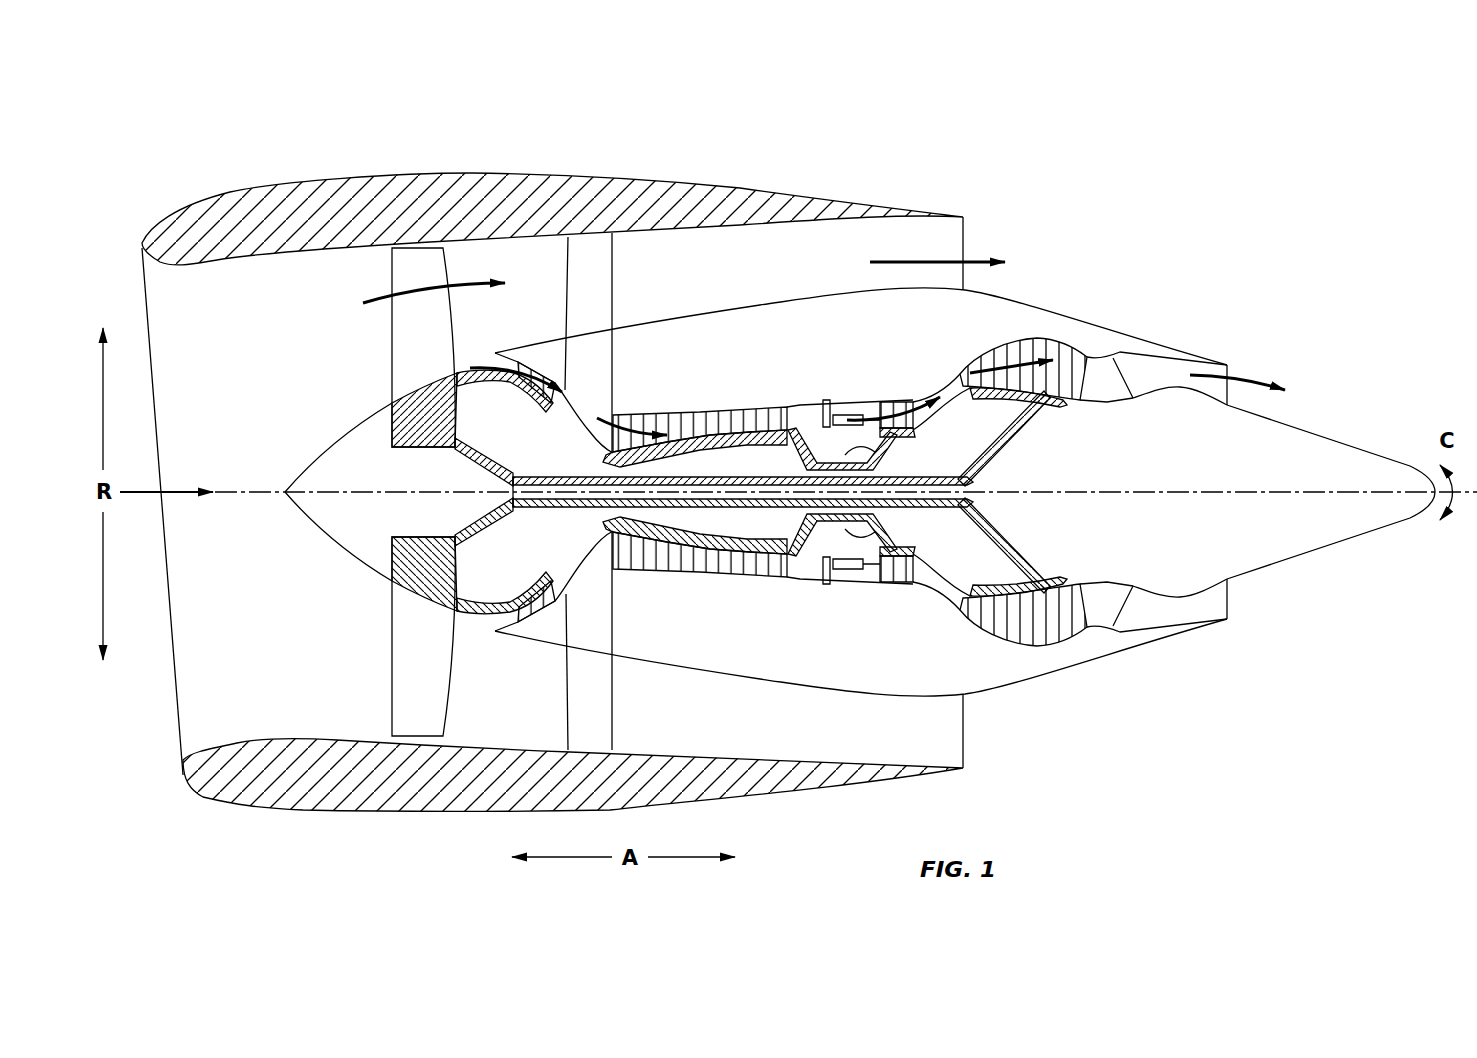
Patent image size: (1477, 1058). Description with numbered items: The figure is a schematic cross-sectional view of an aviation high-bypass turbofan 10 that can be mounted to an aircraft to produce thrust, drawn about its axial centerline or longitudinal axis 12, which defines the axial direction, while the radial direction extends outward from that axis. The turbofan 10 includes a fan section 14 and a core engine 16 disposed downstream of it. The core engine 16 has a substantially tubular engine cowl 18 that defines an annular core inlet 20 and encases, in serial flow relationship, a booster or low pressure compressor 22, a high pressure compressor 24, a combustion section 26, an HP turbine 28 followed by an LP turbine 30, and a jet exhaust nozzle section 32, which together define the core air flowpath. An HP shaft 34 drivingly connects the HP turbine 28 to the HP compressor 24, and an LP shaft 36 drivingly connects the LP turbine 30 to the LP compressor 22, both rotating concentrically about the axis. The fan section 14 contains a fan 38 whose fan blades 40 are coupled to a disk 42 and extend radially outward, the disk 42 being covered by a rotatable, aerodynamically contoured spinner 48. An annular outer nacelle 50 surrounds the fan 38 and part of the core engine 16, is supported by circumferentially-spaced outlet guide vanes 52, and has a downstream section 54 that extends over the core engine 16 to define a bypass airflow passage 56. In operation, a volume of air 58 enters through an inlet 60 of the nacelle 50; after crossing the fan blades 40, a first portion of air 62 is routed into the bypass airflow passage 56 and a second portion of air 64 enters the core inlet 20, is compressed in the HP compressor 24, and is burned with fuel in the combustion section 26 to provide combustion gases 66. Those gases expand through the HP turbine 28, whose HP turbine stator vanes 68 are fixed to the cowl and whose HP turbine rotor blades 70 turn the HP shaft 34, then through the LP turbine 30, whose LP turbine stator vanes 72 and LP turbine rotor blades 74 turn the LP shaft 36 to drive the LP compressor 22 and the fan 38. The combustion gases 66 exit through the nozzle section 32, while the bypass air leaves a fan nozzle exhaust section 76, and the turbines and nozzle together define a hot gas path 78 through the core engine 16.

The turbofan 10 is at (1140, 190).
The longitudinal axis 12 is at (1160, 492).
The fan section 14 is at (343, 280).
The core engine 16 is at (752, 365).
The engine cowl 18 is at (797, 685).
The annular core inlet 20 is at (513, 617).
The low pressure compressor 22 is at (563, 590).
The high pressure compressor 24 is at (660, 560).
The combustion section 26 is at (850, 567).
The HP turbine 28 is at (918, 578).
The LP turbine 30 is at (1065, 640).
The jet exhaust nozzle section 32 is at (1232, 365).
The HP shaft 34 is at (893, 453).
The LP shaft 36 is at (525, 458).
The fan 38 is at (352, 378).
The fan blades 40 is at (392, 675).
The disk 42 is at (417, 437).
The spinner 48 is at (300, 530).
The outer nacelle 50 is at (400, 812).
The outlet guide vanes 52 is at (612, 258).
The downstream section of the nacelle 54 is at (906, 205).
The bypass airflow passage 56 is at (895, 266).
The volume of air 58 is at (153, 493).
The inlet 60 is at (180, 737).
The first portion of air 62 is at (410, 296).
The second portion of air 64 is at (486, 362).
The combustion gases 66 is at (905, 402).
The HP turbine stator vanes 68 is at (868, 580).
The HP turbine rotor blades 70 is at (885, 567).
The LP turbine stator vanes 72 is at (970, 628).
The LP turbine rotor blades 74 is at (985, 612).
The fan nozzle exhaust section 76 is at (960, 242).
The hot gas path 78 is at (955, 385).